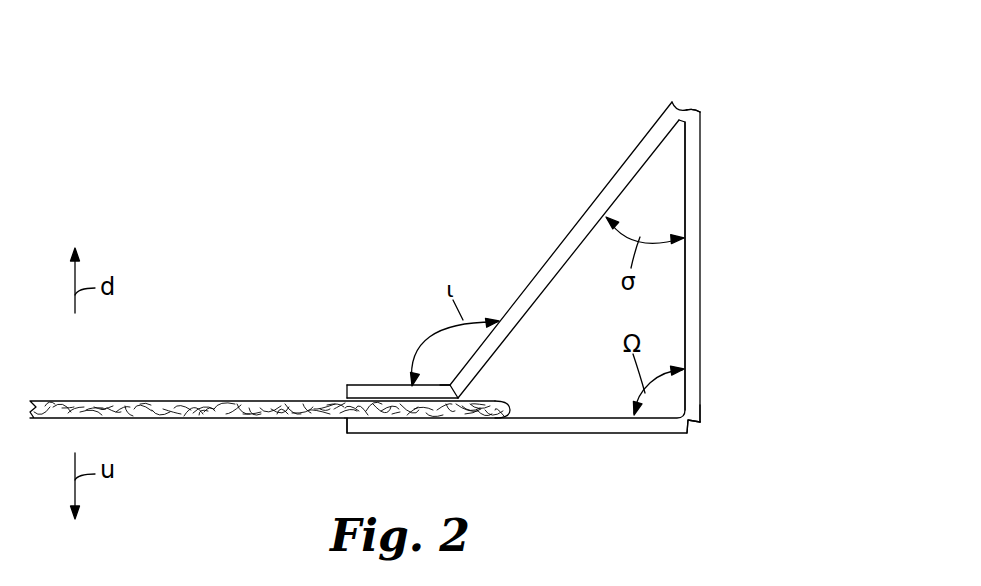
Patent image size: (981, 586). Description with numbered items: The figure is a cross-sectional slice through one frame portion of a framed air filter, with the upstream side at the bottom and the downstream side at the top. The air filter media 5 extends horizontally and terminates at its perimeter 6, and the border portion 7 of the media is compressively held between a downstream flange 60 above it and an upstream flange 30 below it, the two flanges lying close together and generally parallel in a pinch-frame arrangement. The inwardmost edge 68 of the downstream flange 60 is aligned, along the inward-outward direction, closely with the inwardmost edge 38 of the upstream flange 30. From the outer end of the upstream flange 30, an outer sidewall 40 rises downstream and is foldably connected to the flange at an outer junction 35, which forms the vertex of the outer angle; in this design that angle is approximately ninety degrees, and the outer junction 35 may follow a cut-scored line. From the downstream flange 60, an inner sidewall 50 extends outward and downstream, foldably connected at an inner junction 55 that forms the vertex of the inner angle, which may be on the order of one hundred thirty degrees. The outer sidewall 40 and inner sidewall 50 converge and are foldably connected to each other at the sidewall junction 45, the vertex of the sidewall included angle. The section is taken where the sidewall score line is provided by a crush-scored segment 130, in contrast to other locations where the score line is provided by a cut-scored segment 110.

The air filter media 5 is at (139, 400).
The perimeter 6 is at (508, 408).
The border portion 7 is at (478, 410).
The upstream flange 30 is at (372, 434).
The outer junction 35 is at (697, 434).
The inwardmost edge of upstream flange 38 is at (343, 428).
The outer sidewall 40 is at (695, 287).
The sidewall junction 45 is at (689, 97).
The inner sidewall 50 is at (567, 240).
The inner junction 55 is at (447, 379).
The downstream flange 60 is at (386, 384).
The inwardmost edge of downstream flange 68 is at (346, 390).
The cut-scored segment 110 is at (711, 426).
The crush-scored segment 130 is at (704, 98).